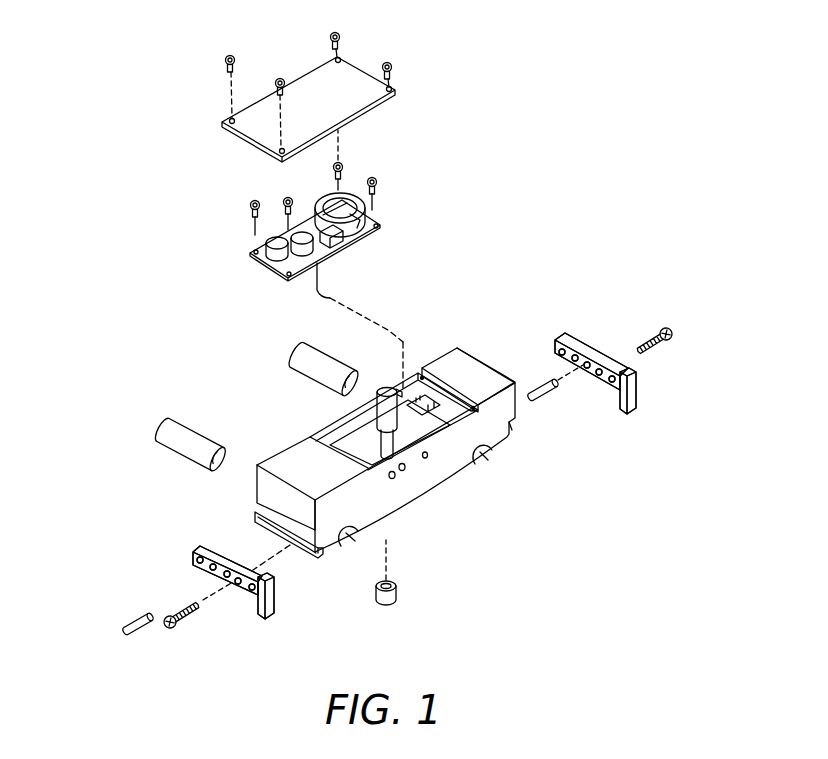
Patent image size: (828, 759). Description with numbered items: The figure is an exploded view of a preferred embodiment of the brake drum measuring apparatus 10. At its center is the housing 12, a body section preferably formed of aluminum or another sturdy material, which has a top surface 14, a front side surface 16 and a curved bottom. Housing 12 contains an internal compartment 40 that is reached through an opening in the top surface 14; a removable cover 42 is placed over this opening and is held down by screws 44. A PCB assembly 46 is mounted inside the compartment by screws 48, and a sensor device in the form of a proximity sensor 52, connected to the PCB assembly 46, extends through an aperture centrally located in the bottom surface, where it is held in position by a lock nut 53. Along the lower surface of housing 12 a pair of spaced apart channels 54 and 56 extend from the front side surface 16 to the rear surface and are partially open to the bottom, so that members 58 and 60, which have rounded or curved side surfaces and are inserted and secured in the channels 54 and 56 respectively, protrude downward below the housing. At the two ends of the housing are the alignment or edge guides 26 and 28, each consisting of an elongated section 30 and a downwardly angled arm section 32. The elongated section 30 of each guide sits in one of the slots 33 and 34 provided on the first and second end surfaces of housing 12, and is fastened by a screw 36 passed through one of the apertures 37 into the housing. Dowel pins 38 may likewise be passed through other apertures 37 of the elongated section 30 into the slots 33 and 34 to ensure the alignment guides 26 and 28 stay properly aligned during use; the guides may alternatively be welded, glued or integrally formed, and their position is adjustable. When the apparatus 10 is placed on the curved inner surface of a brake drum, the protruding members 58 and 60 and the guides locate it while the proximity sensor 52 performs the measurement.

The brake drum measuring apparatus 10 is at (106, 331).
The housing 12 is at (432, 528).
The top surface 14 is at (475, 378).
The front side surface 16 is at (433, 477).
The alignment guide 26 is at (200, 548).
The alignment guide 28 is at (583, 347).
The elongated section 30 is at (200, 572).
The downwardly angled arm section 32 is at (270, 604).
The slot 33 is at (265, 512).
The slot 34 is at (513, 426).
The screw 36 is at (178, 625).
The aperture 37 is at (250, 590).
The dowel pin 38 is at (130, 620).
The internal compartment 40 is at (338, 437).
The removable cover 42 is at (317, 87).
The screws 44 is at (385, 63).
The PCB assembly 46 is at (248, 255).
The screws 48 is at (372, 175).
The proximity sensor 52 is at (380, 405).
The lock nut 53 is at (392, 593).
The channel 54 is at (357, 544).
The channel 56 is at (490, 458).
The member 58 is at (170, 430).
The member 60 is at (312, 353).